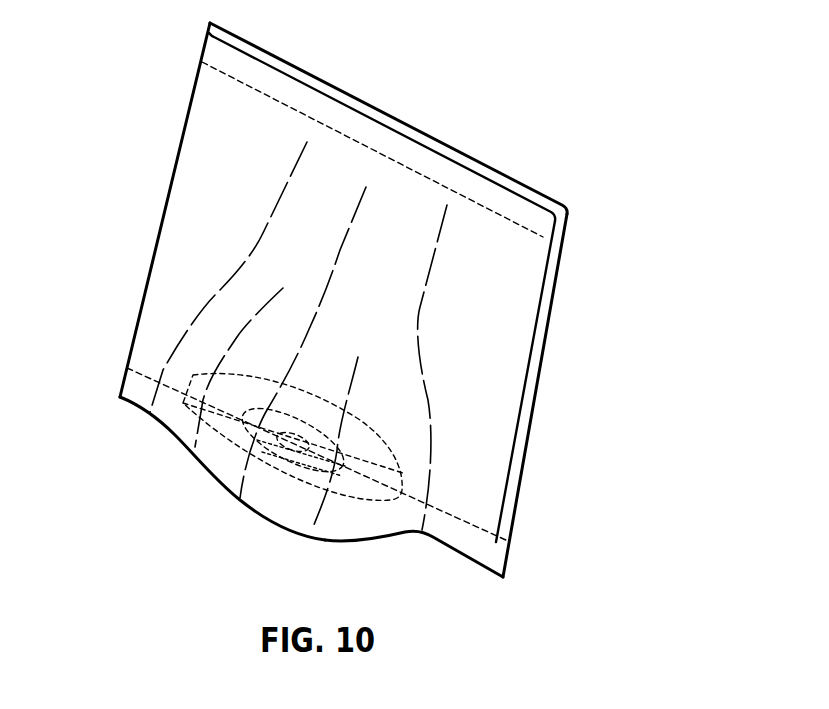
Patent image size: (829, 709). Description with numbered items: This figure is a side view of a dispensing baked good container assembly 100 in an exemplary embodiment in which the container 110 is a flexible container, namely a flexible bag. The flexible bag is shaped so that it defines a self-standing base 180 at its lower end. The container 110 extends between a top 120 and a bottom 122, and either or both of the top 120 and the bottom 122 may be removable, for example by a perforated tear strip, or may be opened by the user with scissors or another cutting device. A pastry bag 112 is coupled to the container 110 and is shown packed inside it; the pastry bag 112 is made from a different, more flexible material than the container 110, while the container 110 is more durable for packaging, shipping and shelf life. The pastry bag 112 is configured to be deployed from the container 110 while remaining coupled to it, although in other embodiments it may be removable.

The container assembly 100 is at (562, 158).
The container 110 is at (554, 321).
The pastry bag 112 is at (228, 435).
The top 120 is at (481, 162).
The bottom 122 is at (433, 539).
The self-standing base 180 is at (267, 515).